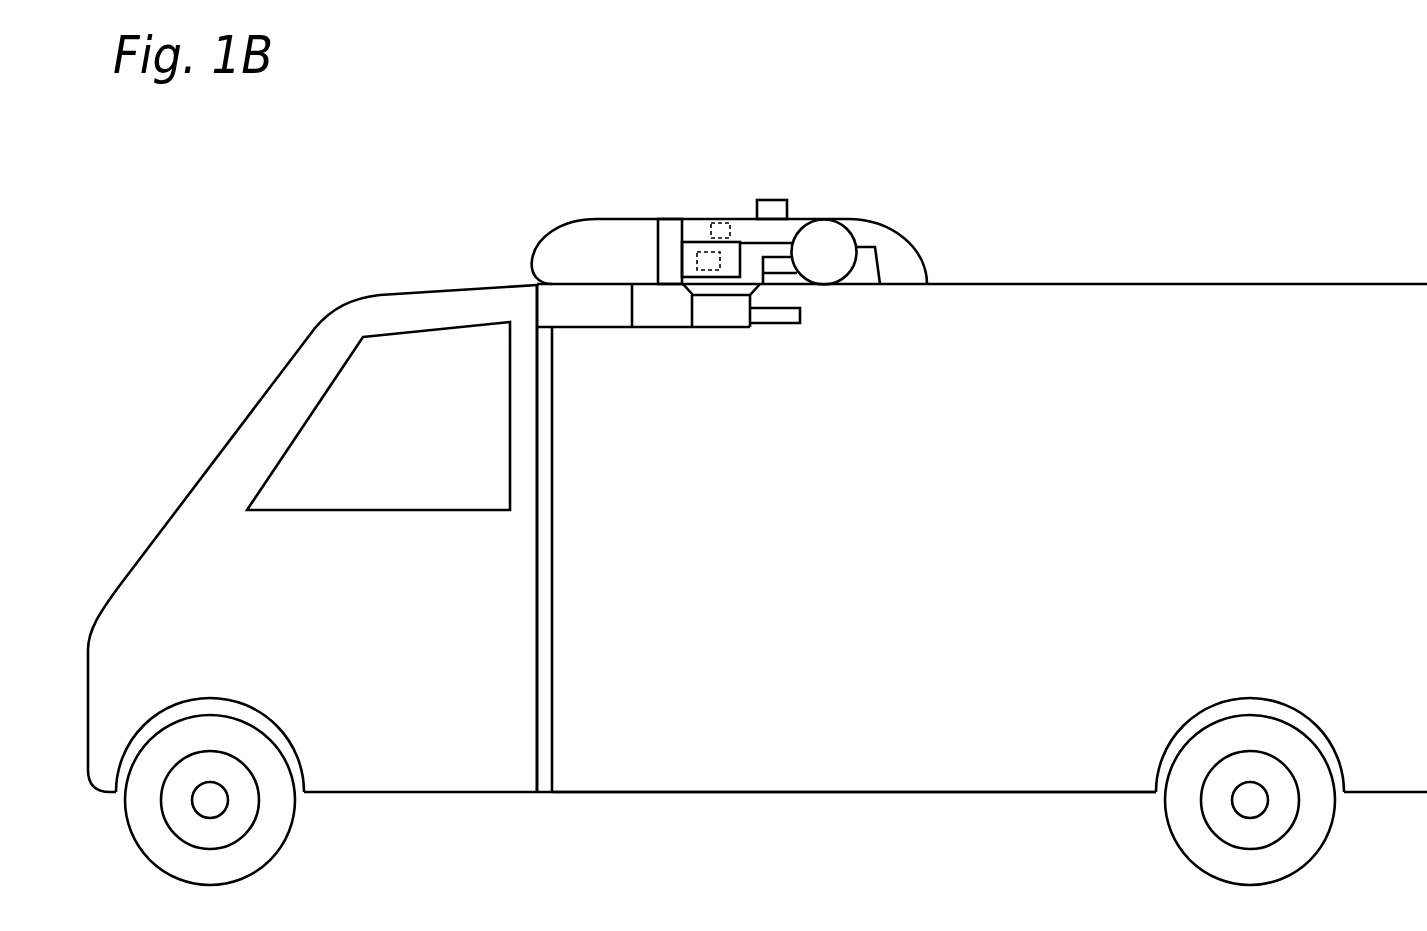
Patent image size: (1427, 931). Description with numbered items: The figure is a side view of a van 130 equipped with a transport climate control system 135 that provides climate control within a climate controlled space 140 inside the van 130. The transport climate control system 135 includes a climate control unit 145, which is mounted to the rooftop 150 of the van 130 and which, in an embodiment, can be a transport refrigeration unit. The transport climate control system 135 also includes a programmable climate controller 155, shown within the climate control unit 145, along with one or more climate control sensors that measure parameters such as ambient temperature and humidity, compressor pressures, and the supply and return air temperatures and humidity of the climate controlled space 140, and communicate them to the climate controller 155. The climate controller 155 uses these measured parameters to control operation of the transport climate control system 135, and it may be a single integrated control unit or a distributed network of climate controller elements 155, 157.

The van 130 is at (284, 270).
The transport climate control system 135 is at (758, 217).
The climate controlled space 140 is at (1305, 323).
The climate control unit 145 is at (900, 235).
The rooftop 150 is at (1165, 283).
The climate controller 155 is at (722, 221).
The climate controller element 157 is at (705, 250).